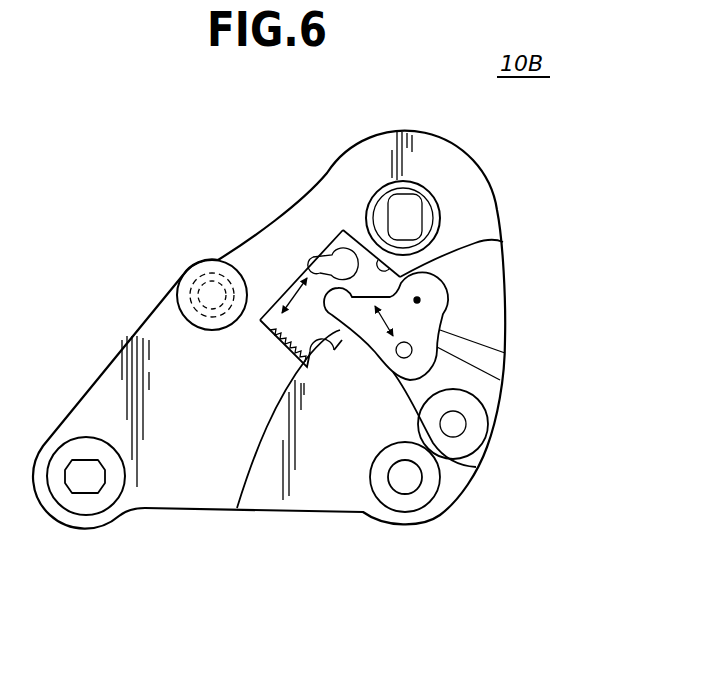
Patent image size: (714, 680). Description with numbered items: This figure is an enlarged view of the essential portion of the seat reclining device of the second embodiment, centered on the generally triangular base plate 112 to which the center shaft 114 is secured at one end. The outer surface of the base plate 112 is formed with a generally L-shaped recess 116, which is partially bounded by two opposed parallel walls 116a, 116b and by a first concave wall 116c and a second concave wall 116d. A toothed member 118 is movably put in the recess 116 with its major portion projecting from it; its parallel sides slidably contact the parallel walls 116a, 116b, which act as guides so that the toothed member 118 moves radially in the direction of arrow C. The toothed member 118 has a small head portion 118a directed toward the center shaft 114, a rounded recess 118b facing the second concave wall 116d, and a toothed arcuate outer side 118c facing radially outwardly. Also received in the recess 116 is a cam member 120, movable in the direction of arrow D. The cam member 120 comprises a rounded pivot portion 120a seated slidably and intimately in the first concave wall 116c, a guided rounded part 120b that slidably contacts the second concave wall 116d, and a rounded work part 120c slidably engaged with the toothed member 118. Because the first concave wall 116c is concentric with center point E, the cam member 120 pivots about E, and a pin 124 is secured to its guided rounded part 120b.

The base plate 112 is at (477, 178).
The center shaft 114 is at (403, 208).
The recess 116 is at (417, 350).
The parallel wall 116a is at (323, 257).
The parallel wall 116b is at (237, 508).
The first concave wall 116c is at (442, 308).
The second concave wall 116d is at (466, 468).
The toothed member 118 is at (206, 320).
The small head portion 118a is at (343, 230).
The rounded recess 118b is at (333, 258).
The toothed arcuate outer side 118c is at (265, 352).
The cam member 120 is at (449, 424).
The rounded pivot portion 120a is at (443, 283).
The guided rounded part 120b is at (403, 383).
The rounded work part 120c is at (360, 338).
The pin 124 is at (408, 352).
The direction of radial movement of the toothed member C is at (305, 283).
The direction of movement of the cam member D is at (343, 302).
The center point of cam pivoting E is at (505, 353).